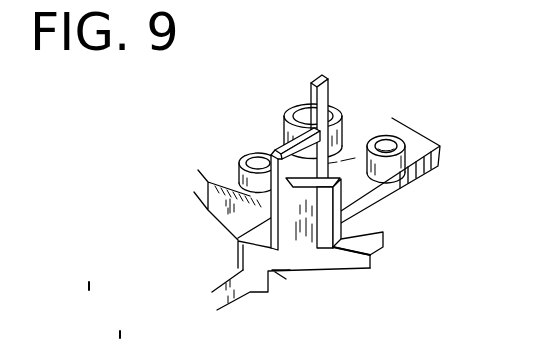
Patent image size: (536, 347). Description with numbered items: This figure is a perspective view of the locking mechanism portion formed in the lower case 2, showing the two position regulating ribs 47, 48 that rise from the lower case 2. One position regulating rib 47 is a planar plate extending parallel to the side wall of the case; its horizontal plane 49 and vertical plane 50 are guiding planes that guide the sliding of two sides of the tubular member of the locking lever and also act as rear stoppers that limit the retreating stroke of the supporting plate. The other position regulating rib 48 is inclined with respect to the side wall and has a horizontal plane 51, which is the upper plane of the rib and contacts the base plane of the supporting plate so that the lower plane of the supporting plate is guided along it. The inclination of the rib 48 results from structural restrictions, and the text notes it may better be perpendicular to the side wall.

The lower case 2 is at (432, 176).
The position regulating rib 47 is at (346, 167).
The position regulating rib 48 is at (313, 238).
The horizontal plane 49 is at (280, 152).
The vertical plane 50 is at (311, 91).
The horizontal plane 51 is at (270, 201).